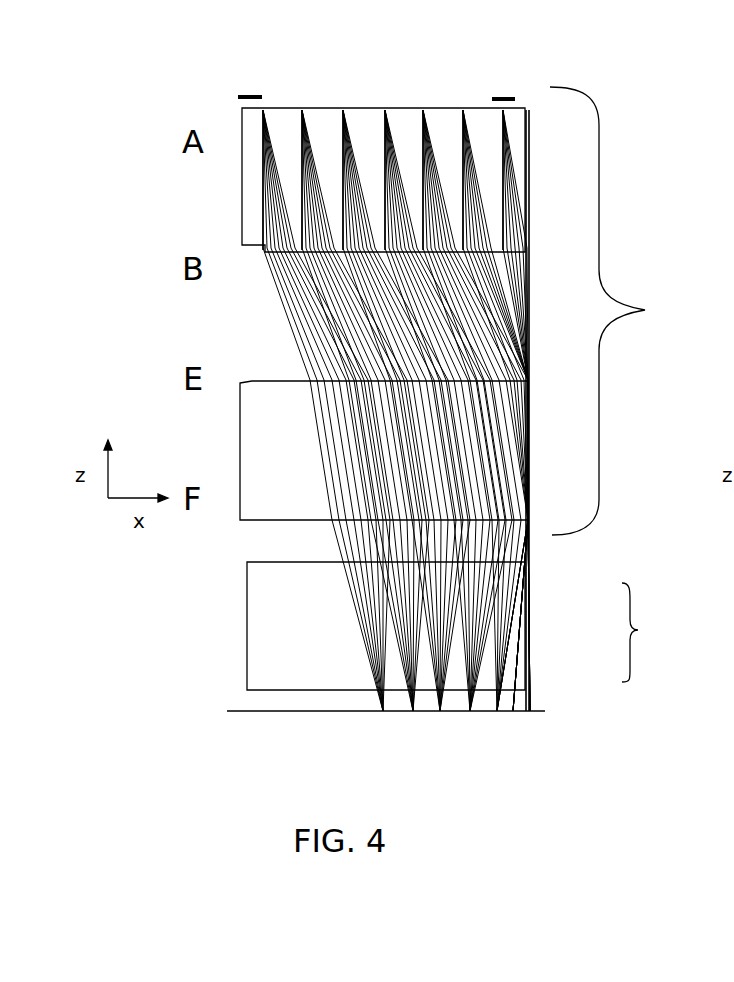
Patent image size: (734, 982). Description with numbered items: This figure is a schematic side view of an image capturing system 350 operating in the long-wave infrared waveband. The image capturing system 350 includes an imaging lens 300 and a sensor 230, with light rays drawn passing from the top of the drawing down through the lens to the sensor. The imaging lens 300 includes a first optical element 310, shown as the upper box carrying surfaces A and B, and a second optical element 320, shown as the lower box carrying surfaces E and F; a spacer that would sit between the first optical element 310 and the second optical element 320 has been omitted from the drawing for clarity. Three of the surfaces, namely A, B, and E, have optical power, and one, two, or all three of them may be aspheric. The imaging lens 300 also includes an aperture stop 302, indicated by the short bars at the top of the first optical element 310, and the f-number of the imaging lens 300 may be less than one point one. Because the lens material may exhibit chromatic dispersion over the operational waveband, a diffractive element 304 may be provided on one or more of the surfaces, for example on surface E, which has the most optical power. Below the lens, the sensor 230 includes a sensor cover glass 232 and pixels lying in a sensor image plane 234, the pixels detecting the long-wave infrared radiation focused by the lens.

The imaging lens 300 is at (633, 311).
The aperture stop 302 is at (242, 96).
The diffractive element 304 is at (372, 366).
The first optical element 310 is at (416, 180).
The second optical element 320 is at (415, 450).
The image capturing system 350 is at (408, 75).
The sensor 230 is at (462, 636).
The sensor cover glass 232 is at (430, 626).
The sensor image plane 234 is at (420, 685).